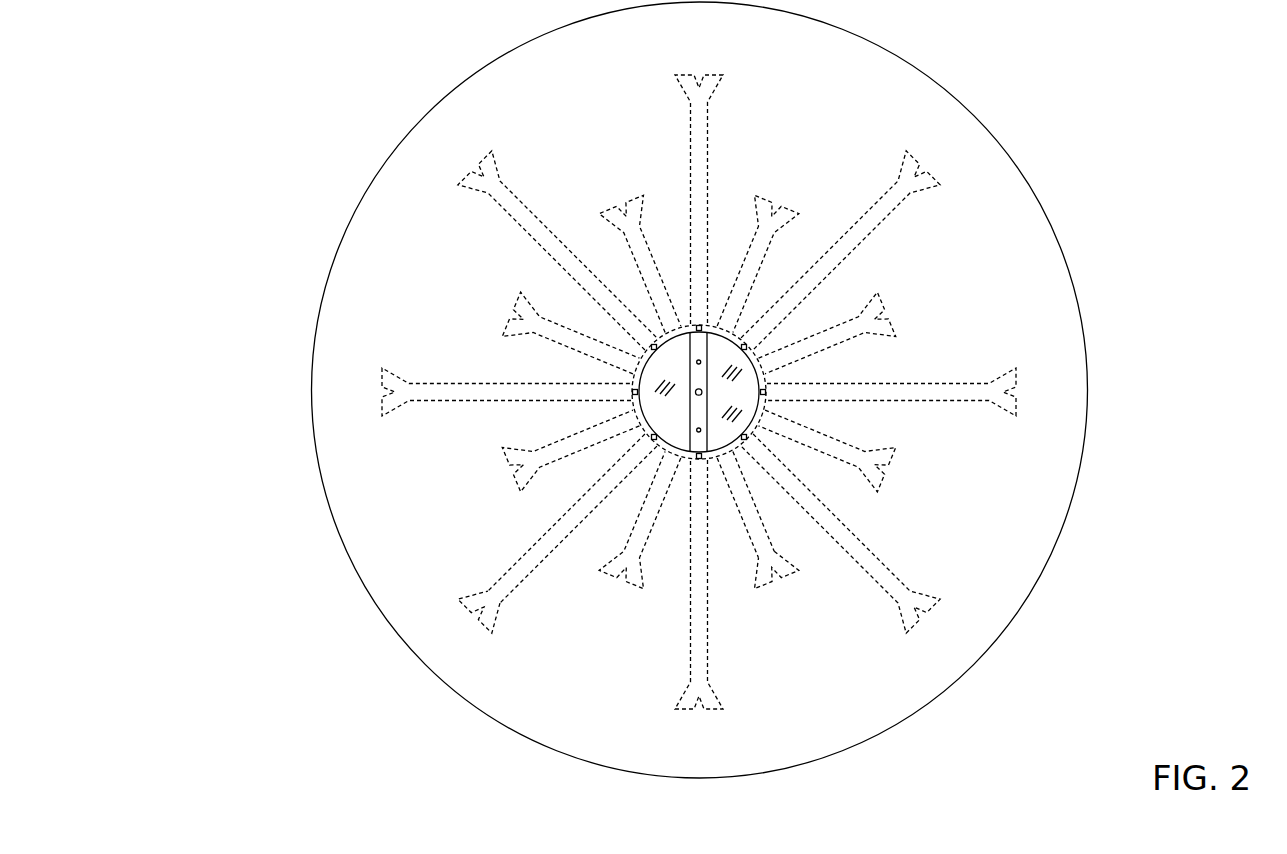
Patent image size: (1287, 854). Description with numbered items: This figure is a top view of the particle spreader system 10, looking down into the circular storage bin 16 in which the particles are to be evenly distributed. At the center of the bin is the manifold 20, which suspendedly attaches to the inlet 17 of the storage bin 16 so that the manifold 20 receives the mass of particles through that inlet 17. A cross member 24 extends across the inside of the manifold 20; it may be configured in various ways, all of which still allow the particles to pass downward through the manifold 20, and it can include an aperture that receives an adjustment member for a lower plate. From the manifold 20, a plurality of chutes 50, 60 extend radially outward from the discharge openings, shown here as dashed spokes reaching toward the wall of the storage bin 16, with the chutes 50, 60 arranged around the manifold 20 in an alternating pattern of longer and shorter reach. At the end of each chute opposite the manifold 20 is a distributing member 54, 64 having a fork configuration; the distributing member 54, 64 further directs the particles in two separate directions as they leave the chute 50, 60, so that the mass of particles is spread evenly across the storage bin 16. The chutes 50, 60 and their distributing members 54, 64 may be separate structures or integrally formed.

The particle spreader system 10 is at (243, 83).
The storage bin 16 is at (326, 500).
The inlet 17 is at (740, 403).
The manifold 20 is at (686, 458).
The cross member 24 is at (698, 348).
The chute 50 is at (518, 558).
The distributing member 54 is at (493, 628).
The chute 60 is at (747, 528).
The distributing member 64 is at (793, 568).